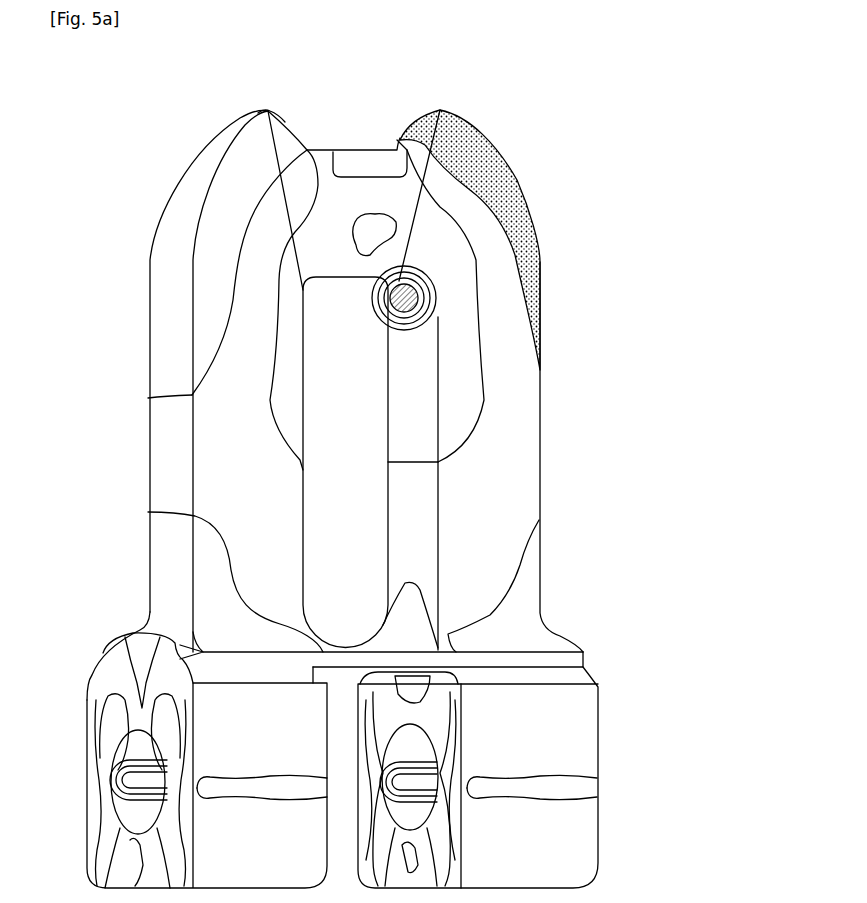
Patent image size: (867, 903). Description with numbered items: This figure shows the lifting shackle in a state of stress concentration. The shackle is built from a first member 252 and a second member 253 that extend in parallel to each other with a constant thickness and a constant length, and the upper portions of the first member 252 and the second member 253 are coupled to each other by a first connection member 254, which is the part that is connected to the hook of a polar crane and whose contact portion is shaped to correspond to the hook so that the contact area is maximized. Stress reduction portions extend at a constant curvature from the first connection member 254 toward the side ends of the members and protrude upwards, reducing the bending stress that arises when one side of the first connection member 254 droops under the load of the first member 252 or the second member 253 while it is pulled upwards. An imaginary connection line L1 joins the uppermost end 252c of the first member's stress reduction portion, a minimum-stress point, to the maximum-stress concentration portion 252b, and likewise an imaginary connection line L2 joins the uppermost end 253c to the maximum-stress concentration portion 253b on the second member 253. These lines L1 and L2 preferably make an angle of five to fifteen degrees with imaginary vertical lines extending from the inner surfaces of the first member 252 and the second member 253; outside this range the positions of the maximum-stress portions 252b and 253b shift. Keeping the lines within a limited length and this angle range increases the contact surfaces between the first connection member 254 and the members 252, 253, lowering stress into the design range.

The first member 252 is at (228, 458).
The maximum-stress concentration portion 252b is at (303, 335).
The uppermost end 252c is at (262, 111).
The second member 253 is at (527, 454).
The maximum-stress concentration portion 253b is at (432, 273).
The uppermost end 253c is at (440, 110).
The first connection member 254 is at (343, 190).
The imaginary connection line L1 is at (273, 155).
The imaginary connection line L2 is at (430, 142).